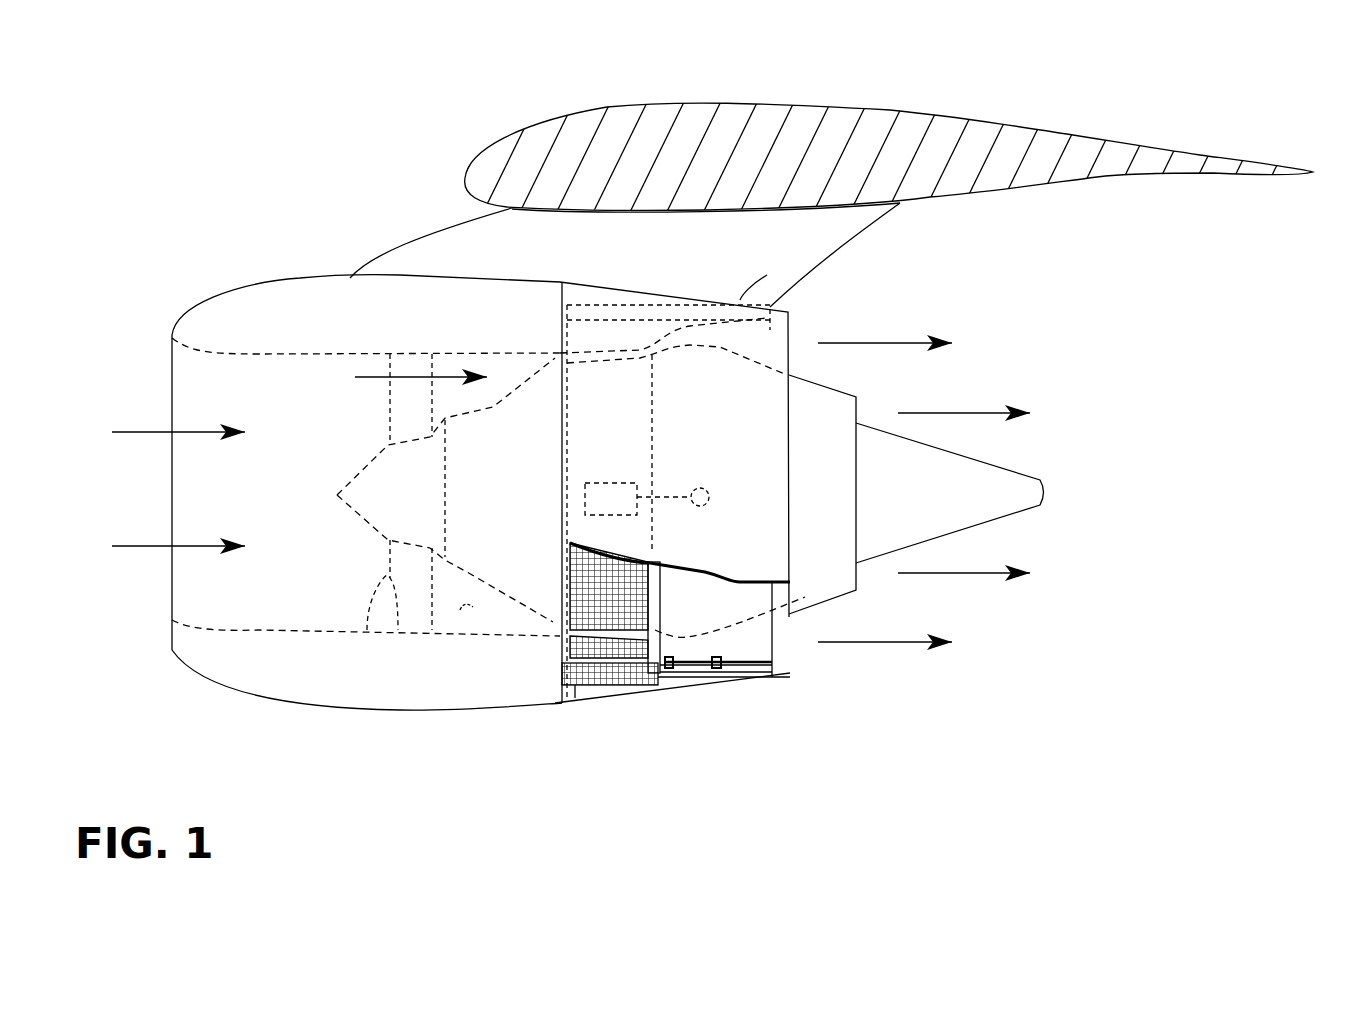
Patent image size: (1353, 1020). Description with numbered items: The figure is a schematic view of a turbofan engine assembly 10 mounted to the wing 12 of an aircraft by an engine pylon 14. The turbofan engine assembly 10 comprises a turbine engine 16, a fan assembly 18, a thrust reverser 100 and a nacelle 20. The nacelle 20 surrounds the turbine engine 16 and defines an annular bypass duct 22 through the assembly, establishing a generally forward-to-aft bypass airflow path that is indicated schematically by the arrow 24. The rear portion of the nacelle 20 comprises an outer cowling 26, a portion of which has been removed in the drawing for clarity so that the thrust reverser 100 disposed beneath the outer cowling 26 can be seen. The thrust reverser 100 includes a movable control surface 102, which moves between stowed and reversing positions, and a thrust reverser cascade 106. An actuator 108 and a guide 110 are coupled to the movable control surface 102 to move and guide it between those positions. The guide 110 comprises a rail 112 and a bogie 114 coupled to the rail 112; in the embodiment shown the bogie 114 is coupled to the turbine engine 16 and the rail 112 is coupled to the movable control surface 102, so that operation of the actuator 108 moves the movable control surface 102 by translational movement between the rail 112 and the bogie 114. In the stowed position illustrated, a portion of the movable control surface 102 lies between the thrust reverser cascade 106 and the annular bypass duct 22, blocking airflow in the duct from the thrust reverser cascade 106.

The turbofan engine assembly 10 is at (188, 275).
The wing 12 is at (592, 115).
The engine pylon 14 is at (398, 255).
The turbine engine 16 is at (527, 604).
The fan assembly 18 is at (368, 632).
The nacelle 20 is at (307, 701).
The annular bypass duct 22 is at (460, 612).
The arrow 24 is at (152, 430).
The outer cowling 26 is at (767, 275).
The thrust reverser 100 is at (632, 692).
The movable control surface 102 is at (758, 645).
The thrust reverser cascade 106 is at (575, 698).
The actuator 108 is at (622, 503).
The guide 110 is at (740, 679).
The rail 112 is at (758, 678).
The bogie 114 is at (715, 653).